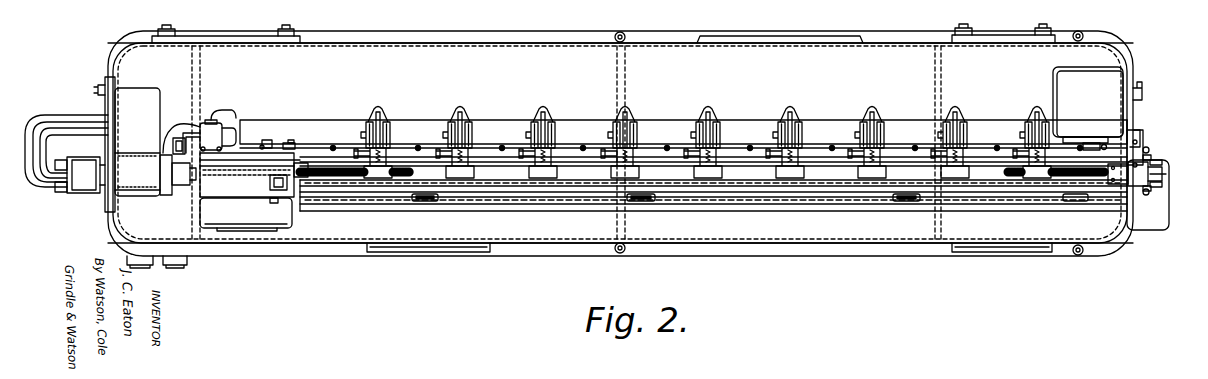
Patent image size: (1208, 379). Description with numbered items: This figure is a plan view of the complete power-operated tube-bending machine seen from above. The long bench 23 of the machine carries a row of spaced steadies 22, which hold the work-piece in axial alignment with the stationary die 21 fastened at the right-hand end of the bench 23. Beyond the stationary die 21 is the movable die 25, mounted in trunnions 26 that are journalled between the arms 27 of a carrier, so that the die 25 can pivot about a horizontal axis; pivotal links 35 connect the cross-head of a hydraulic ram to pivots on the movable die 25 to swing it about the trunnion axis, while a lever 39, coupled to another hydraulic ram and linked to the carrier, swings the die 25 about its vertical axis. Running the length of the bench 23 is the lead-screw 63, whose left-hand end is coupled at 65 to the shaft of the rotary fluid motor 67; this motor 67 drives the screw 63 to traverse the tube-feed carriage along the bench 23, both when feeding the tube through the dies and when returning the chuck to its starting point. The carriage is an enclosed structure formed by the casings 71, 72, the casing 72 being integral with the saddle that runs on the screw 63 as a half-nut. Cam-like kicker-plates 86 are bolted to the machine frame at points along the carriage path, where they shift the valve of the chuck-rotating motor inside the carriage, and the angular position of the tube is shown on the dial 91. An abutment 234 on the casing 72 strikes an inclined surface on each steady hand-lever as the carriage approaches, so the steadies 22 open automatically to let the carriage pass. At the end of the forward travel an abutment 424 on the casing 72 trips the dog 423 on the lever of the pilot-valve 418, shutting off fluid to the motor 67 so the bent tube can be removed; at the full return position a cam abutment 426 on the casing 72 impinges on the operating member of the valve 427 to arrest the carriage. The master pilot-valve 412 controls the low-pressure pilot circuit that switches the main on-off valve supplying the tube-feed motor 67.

The stationary die 21 is at (1145, 142).
The steadies 22 is at (468, 177).
The bench 23 is at (652, 162).
The movable die 25 is at (1162, 174).
The trunnions 26 is at (1149, 193).
The arms 27 is at (1148, 192).
The pivotal links 35 is at (1162, 184).
The lever 39 is at (1142, 137).
The lead-screw 63 is at (400, 180).
The coupling 65 is at (182, 178).
The rotary fluid motor 67 is at (88, 183).
The casing 71 is at (248, 222).
The casing 72 is at (245, 160).
The kicker-plates 86 is at (425, 201).
The dial 91 is at (308, 195).
The abutment 234 is at (297, 160).
The master pilot-valve 412 is at (1143, 92).
The pilot-valve 418 is at (1095, 143).
The dog 423 is at (1080, 140).
The abutment 424 is at (266, 142).
The cam abutment 426 is at (218, 157).
The valve 427 is at (212, 122).